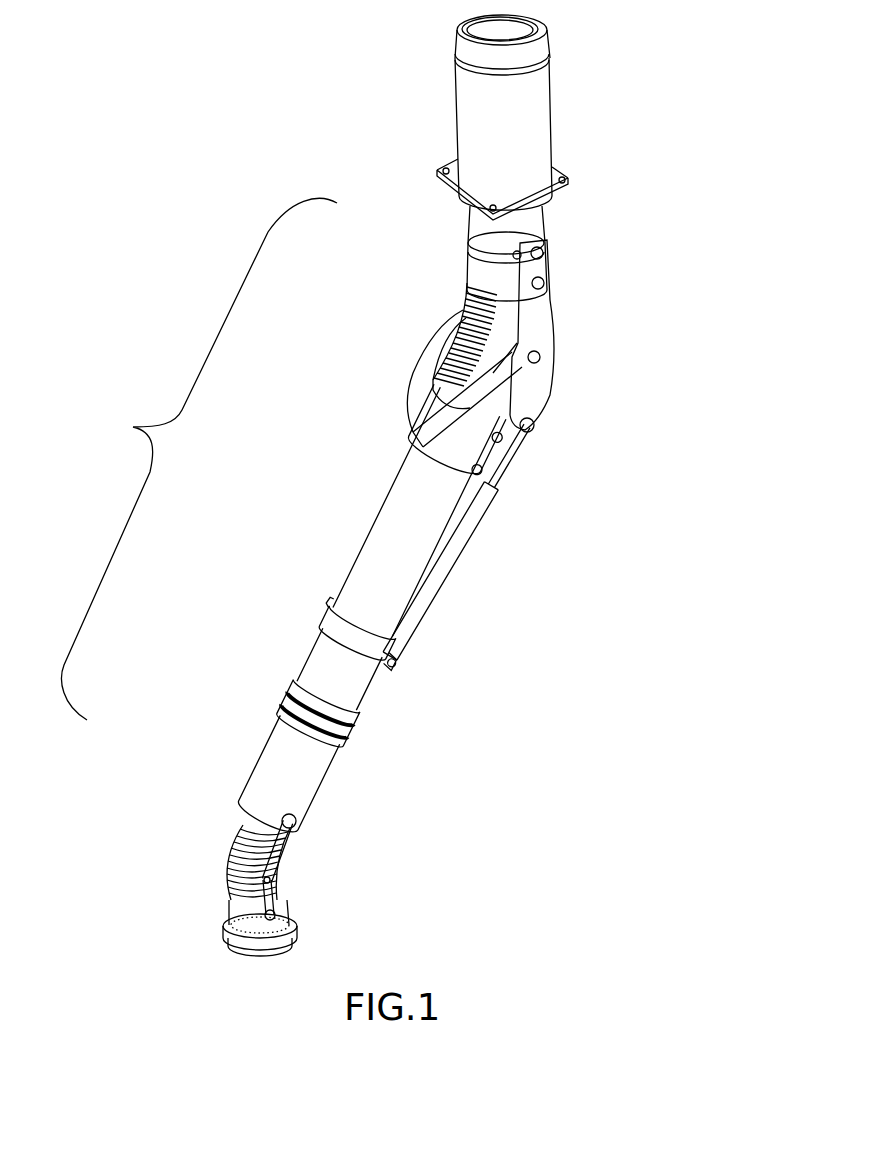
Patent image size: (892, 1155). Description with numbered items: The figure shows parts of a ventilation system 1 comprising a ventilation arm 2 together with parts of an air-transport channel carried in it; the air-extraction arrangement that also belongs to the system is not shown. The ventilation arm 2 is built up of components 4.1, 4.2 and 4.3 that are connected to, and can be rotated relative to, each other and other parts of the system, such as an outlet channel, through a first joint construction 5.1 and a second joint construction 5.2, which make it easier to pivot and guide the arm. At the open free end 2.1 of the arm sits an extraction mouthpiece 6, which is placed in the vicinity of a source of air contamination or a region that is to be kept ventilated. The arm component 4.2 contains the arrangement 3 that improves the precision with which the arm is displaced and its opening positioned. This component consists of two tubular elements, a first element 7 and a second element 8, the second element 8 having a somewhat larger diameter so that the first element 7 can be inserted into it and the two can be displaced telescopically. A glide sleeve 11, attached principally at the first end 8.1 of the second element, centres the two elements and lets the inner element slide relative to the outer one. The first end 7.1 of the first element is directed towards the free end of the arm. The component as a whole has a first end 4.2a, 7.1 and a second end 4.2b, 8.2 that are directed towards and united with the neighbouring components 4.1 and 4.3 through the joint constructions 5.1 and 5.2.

The ventilation system 1 is at (220, 143).
The ventilation arm 2 is at (199, 459).
The open free end 2.1 is at (277, 967).
The arrangement 3 is at (257, 546).
The ventilation arm component 4.1 is at (213, 917).
The ventilation arm component 4.2 is at (294, 637).
The first end 4.2a is at (317, 826).
The second end 4.2b is at (526, 455).
The ventilation arm component 4.3 is at (441, 236).
The first joint construction 5.1 is at (198, 852).
The second joint construction 5.2 is at (421, 310).
The extraction mouthpiece 6 is at (300, 923).
The first element 7 is at (290, 757).
The first open end 7.1 is at (404, 870).
The second element 8 is at (380, 547).
The first open end 8.1 is at (417, 693).
The second open end 8.2 is at (577, 433).
The glide sleeve 11 is at (404, 728).